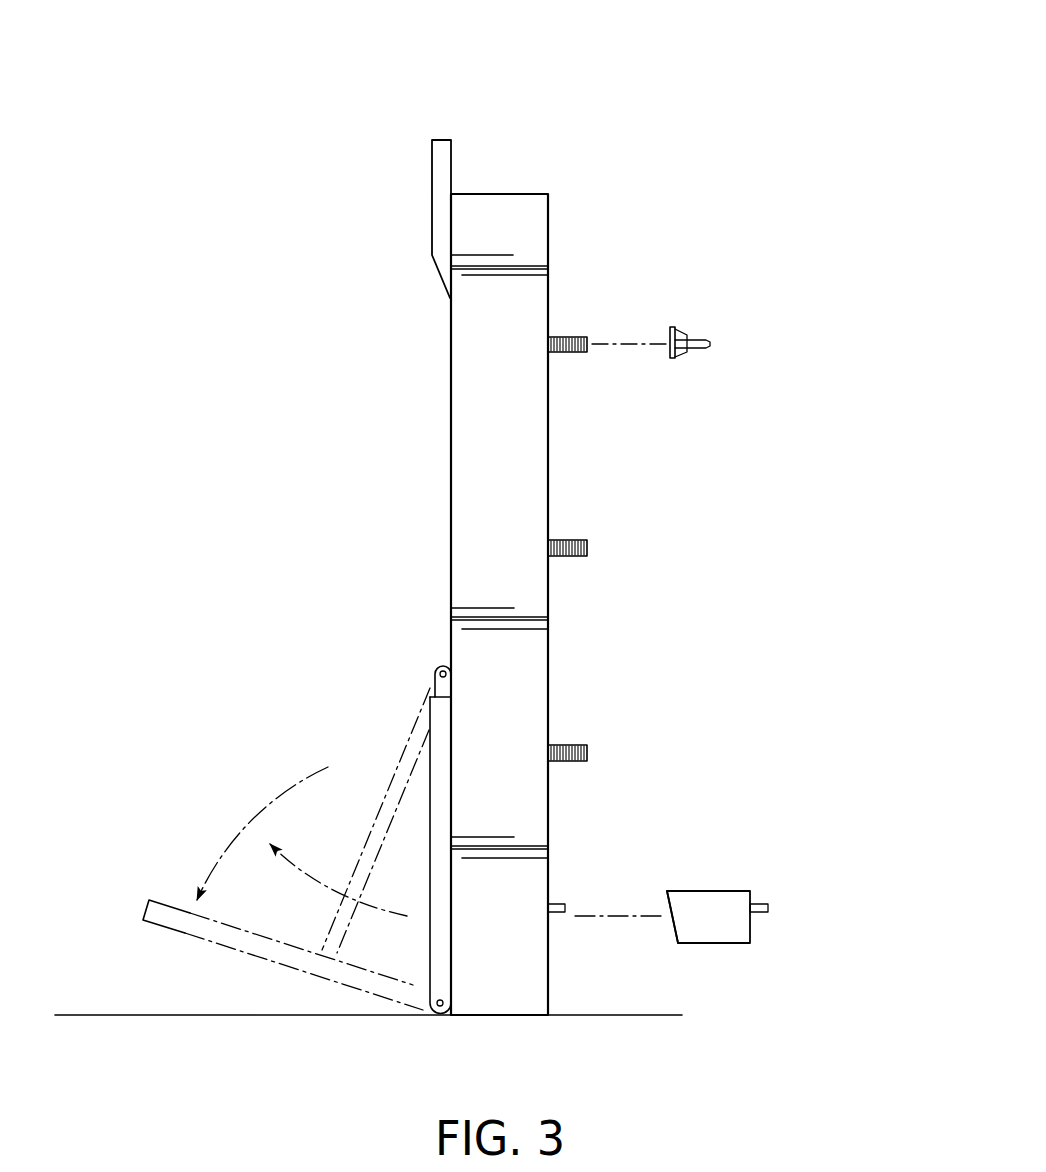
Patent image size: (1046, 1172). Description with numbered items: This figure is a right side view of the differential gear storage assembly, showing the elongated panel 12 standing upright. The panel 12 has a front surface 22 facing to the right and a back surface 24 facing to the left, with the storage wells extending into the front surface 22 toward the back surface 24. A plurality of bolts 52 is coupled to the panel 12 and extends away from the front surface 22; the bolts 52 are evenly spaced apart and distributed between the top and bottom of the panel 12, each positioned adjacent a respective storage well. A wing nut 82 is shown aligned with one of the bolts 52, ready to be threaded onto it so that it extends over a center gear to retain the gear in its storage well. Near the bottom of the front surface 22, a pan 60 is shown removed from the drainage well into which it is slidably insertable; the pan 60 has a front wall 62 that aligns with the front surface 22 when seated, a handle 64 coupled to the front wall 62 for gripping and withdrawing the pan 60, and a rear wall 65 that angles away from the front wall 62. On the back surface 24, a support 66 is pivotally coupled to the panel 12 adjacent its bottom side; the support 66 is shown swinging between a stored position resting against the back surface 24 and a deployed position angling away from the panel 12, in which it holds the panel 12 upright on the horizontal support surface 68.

The panel 12 is at (582, 121).
The front surface 22 is at (548, 660).
The back surface 24 is at (451, 481).
The bolts 52 is at (568, 336).
The wing nuts 82 is at (676, 330).
The supports 66 is at (372, 780).
The horizontal support surface 68 is at (88, 1014).
The pan 60 is at (743, 947).
The front wall 62 is at (753, 917).
The handle 64 is at (768, 904).
The rear wall 65 is at (667, 903).